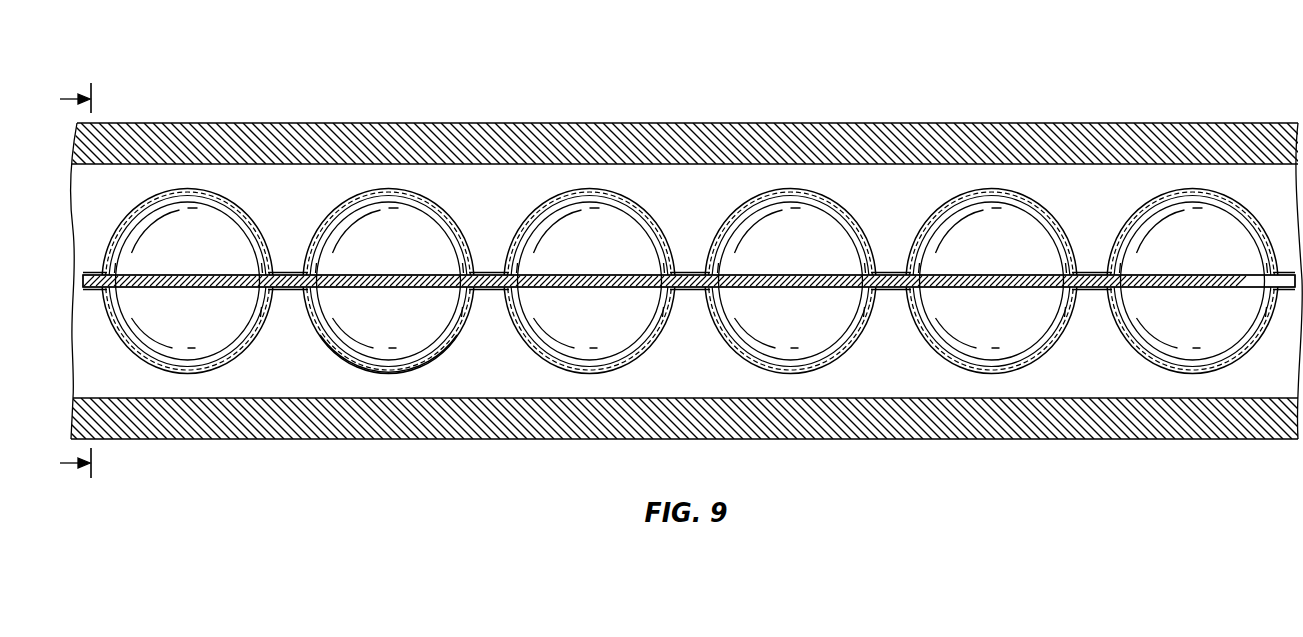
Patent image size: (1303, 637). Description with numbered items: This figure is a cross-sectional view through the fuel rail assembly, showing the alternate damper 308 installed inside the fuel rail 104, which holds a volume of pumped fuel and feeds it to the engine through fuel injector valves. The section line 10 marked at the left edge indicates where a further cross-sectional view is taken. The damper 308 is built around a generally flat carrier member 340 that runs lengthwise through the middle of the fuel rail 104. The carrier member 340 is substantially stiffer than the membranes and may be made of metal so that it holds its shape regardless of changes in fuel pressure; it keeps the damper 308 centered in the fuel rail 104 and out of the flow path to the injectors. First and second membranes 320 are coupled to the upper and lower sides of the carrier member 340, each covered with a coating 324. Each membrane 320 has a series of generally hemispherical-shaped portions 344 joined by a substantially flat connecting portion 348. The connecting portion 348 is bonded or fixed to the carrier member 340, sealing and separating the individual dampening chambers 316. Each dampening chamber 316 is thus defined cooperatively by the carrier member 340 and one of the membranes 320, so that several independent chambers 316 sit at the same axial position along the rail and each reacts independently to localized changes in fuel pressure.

The section line 10 is at (63, 280).
The fuel rail 104 is at (1092, 128).
The damper 308 is at (1254, 192).
The dampening chamber 316 is at (246, 221).
The membrane 320 is at (689, 289).
The coating 324 is at (427, 364).
The carrier member 340 is at (691, 290).
The hemispherical-shaped portion 344 is at (247, 218).
The connecting portion 348 is at (483, 265).